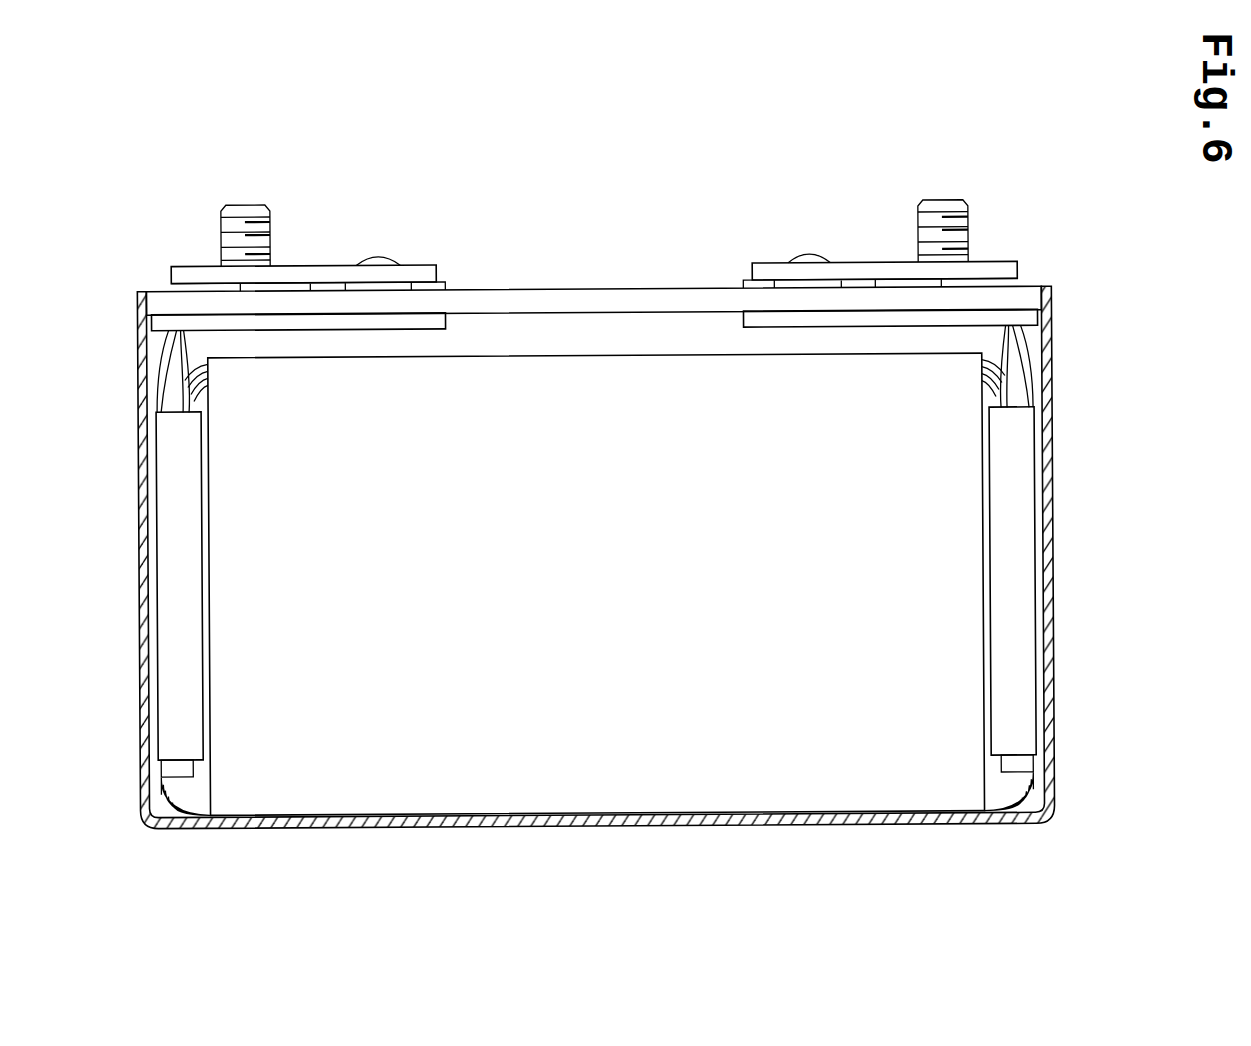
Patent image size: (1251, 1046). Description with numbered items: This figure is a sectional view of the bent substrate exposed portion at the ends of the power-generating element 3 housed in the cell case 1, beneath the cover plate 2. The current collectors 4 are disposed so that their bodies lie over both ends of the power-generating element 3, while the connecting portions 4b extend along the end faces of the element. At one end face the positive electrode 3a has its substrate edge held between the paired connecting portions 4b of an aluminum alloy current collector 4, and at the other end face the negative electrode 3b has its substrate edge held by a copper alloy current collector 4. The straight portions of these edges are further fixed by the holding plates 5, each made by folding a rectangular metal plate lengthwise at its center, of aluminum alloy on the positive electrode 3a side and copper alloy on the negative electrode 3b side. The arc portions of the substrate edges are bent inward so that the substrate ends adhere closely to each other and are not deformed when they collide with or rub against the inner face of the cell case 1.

The cell case 1 is at (1052, 518).
The cover plate 2 is at (540, 298).
The power-generating element 3 is at (605, 373).
The positive electrode 3a is at (997, 781).
The negative electrode 3b is at (196, 788).
The current collector 4 is at (298, 334).
The connecting portion 4b is at (170, 363).
The holding plate 5 is at (167, 593).